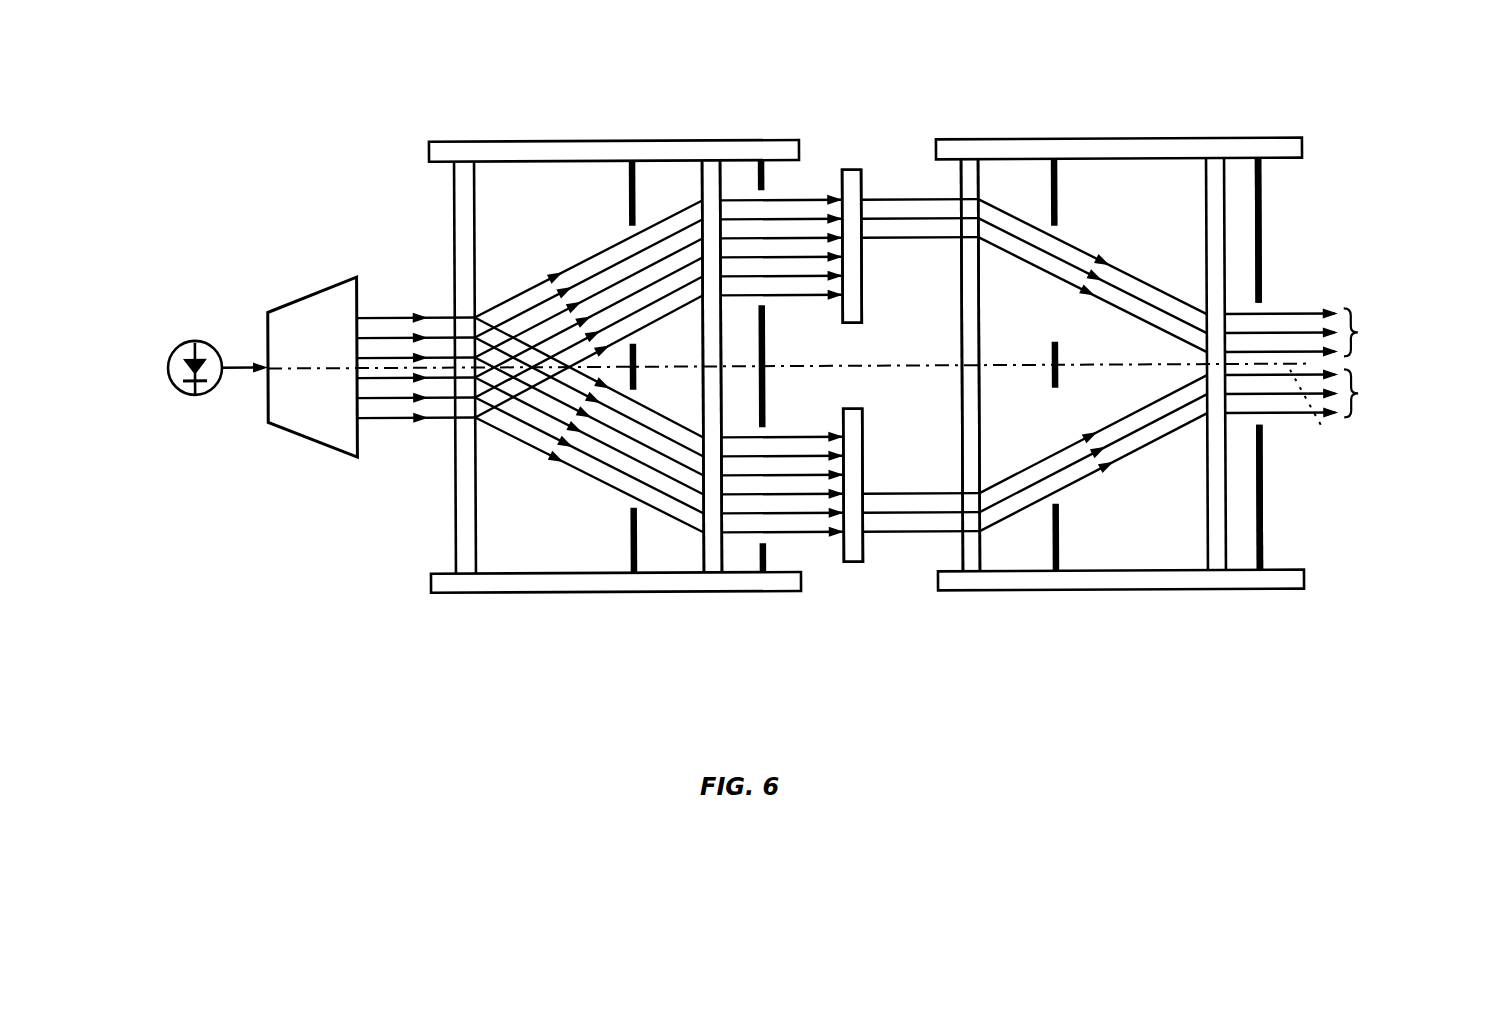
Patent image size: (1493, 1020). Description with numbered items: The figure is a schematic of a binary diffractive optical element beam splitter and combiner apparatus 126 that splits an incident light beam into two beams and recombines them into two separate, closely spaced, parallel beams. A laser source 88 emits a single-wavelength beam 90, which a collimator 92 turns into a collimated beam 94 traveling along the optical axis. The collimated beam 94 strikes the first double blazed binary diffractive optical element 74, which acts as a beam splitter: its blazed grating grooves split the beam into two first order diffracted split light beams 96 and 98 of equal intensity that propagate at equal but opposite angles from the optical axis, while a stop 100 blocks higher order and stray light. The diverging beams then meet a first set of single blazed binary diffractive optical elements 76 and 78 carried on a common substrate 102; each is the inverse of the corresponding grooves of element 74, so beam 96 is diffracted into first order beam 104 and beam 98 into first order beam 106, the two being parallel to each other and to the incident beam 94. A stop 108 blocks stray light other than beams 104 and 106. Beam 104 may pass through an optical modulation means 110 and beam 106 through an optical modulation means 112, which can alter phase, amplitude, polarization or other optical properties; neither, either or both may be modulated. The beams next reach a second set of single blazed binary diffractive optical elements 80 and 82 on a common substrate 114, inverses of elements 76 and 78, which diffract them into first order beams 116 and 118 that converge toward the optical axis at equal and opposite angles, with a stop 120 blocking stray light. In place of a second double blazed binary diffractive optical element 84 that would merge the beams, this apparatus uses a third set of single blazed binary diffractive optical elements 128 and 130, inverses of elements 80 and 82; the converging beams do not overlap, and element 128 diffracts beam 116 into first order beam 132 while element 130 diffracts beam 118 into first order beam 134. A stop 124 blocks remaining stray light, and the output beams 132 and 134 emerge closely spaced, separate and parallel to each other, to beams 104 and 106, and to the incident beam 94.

The binary diffractive optical element beam splitter and combiner apparatus 126 is at (366, 90).
The laser source 88 is at (177, 341).
The beam 90 is at (243, 370).
The collimator 92 is at (313, 288).
The collimated beam 94 is at (398, 314).
The first double blazed binary diffractive optical element 74 is at (457, 520).
The first order diffracted split light beam 96 is at (597, 251).
The first order diffracted split light beam 98 is at (595, 479).
The stop 100 is at (629, 540).
The single blazed binary diffractive optical element 76 is at (724, 178).
The single blazed binary diffractive optical element 78 is at (725, 553).
The common substrate 102 is at (707, 547).
The stop 108 is at (770, 551).
The first order diffracted beam 104 is at (807, 197).
The optical modulation means 110 is at (865, 178).
The first order diffracted beam 106 is at (805, 535).
The optical modulation means 112 is at (867, 545).
The single blazed binary diffractive optical element 80 is at (980, 178).
The single blazed binary diffractive optical element 82 is at (985, 554).
The common substrate 114 is at (968, 546).
The first order diffracted beam 116 is at (1082, 247).
The first order diffracted beam 118 is at (1080, 482).
The stop 120 is at (1062, 539).
The second double blazed binary diffractive optical element 84 is at (1210, 542).
The stop 124 is at (1262, 534).
The single blazed binary diffractive optical element 128 is at (1227, 294).
The single blazed binary diffractive optical element 130 is at (1230, 500).
The first order diffracted beam 132 is at (1326, 332).
The first order diffracted beam 134 is at (1326, 393).